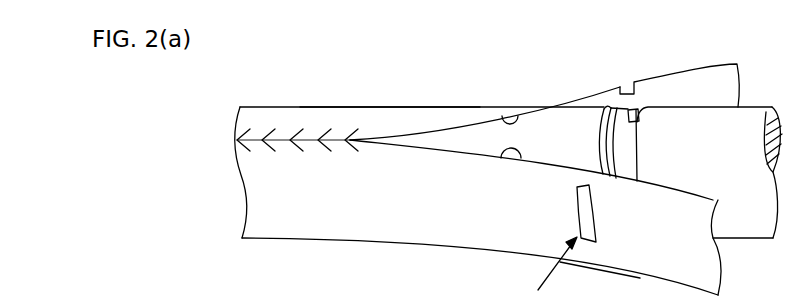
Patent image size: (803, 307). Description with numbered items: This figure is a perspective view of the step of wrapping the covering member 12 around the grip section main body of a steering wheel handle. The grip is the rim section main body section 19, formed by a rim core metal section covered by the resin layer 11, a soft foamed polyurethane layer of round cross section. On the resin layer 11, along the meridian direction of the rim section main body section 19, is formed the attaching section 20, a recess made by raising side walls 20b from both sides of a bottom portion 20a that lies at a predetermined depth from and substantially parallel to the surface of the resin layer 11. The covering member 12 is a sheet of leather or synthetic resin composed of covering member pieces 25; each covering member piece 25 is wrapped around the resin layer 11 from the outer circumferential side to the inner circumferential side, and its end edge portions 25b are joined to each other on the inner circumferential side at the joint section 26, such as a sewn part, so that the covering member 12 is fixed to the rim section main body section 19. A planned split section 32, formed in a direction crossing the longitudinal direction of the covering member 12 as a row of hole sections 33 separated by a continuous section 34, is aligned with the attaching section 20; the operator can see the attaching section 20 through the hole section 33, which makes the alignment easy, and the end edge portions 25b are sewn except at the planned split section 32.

The resin layer 11 is at (758, 106).
The covering member 12 is at (283, 106).
The rim section main body section 19 is at (763, 237).
The attaching section 20 is at (638, 163).
The bottom portion 20a is at (637, 140).
The side walls 20b is at (604, 103).
The covering member piece 25 is at (387, 106).
The end edge portions 25b is at (517, 116).
The joint section 26 is at (346, 138).
The planned split section 32 is at (550, 272).
The hole section 33 is at (591, 213).
The continuous section 34 is at (595, 252).